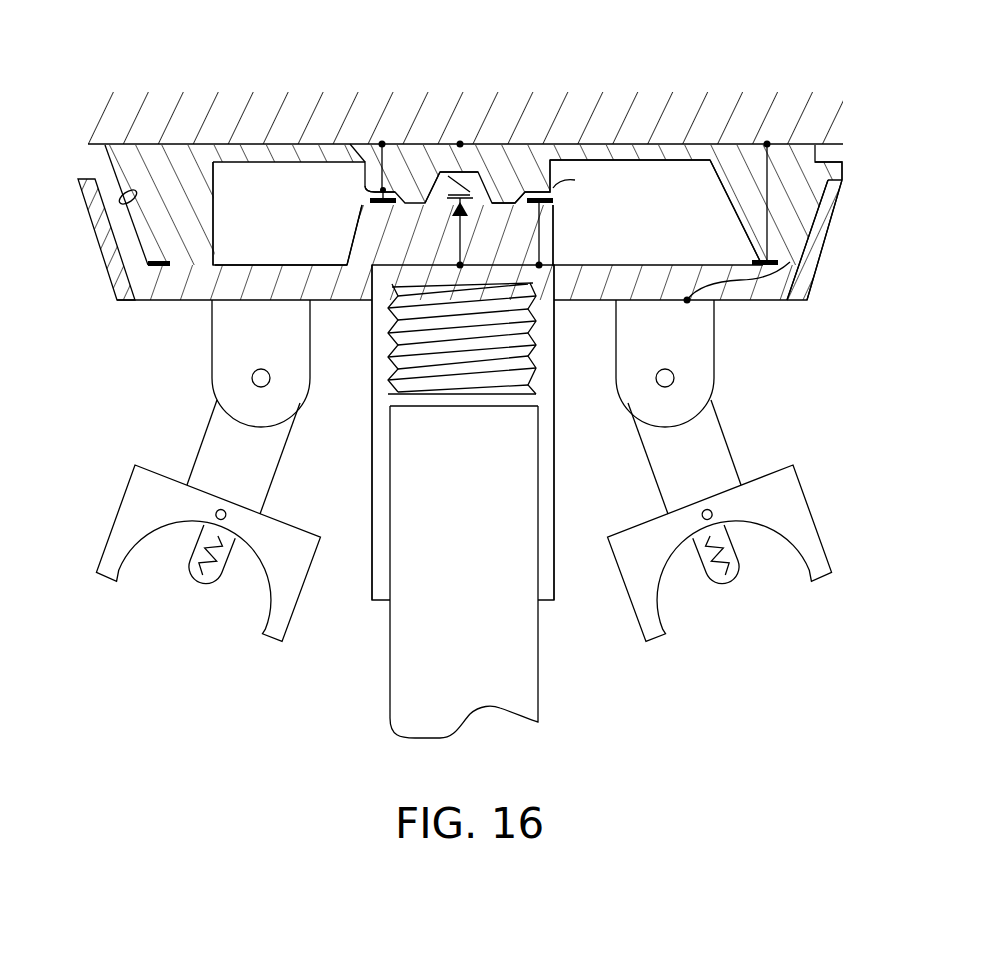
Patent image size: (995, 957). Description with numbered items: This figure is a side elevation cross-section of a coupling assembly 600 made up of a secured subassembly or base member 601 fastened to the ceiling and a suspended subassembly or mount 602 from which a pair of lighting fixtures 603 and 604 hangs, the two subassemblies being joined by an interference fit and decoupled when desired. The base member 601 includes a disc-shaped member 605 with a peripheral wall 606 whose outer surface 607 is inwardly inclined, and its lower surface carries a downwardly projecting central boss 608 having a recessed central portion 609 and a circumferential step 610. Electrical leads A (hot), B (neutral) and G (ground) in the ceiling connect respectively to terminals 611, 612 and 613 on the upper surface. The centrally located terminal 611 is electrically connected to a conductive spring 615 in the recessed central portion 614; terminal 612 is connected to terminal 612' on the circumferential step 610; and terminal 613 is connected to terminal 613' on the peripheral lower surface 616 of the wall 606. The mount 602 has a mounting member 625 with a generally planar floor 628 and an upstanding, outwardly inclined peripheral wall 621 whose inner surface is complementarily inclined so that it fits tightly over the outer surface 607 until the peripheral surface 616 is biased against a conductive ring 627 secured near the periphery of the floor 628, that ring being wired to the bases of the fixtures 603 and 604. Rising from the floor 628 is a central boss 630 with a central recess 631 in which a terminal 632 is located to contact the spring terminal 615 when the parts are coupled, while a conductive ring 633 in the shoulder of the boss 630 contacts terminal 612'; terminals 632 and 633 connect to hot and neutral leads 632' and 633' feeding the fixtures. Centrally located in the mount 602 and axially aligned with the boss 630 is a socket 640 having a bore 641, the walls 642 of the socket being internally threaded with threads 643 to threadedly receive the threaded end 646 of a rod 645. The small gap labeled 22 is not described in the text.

The gap 22 is at (120, 200).
The assembly 600 is at (166, 340).
The base member 601 is at (232, 140).
The mount 602 is at (622, 304).
The lighting fixture 603 is at (300, 458).
The lighting fixture 604 is at (738, 424).
The disc-shaped member 605 is at (630, 186).
The peripheral wall 606 is at (678, 258).
The outer surface 607 is at (817, 162).
The central boss 608 is at (548, 143).
The recessed central portion 609 is at (460, 143).
The circumferential step 610 is at (553, 190).
The terminal 611 is at (462, 143).
The terminal 612 is at (329, 90).
The terminal 612' is at (320, 98).
The terminal 613 is at (803, 154).
The terminal 613' is at (779, 253).
The recessed central portion 614 is at (543, 143).
The conductive spring 615 is at (540, 238).
The peripheral lower surface 616 is at (205, 255).
The peripheral wall 621 is at (108, 258).
The mounting member 625 is at (312, 302).
The conductive ring 627 is at (150, 284).
The planar floor 628 is at (172, 265).
The central boss 630 is at (348, 252).
The central recess 631 is at (370, 199).
The terminal 632 is at (351, 218).
The lead 632' is at (342, 313).
The conductive ring 633 is at (575, 233).
The lead 633' is at (588, 323).
The socket 640 is at (600, 443).
The bore 641 is at (376, 622).
The walls 642 is at (548, 540).
The threads 643 is at (542, 342).
The rod 645 is at (391, 672).
The threaded end 646 is at (395, 385).
The electrical lead A is at (460, 143).
The electrical lead B is at (382, 143).
The electrical lead G is at (767, 143).